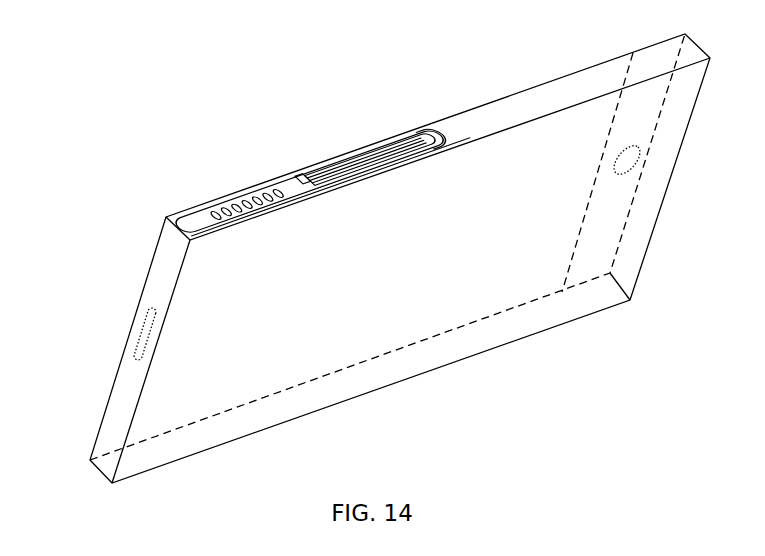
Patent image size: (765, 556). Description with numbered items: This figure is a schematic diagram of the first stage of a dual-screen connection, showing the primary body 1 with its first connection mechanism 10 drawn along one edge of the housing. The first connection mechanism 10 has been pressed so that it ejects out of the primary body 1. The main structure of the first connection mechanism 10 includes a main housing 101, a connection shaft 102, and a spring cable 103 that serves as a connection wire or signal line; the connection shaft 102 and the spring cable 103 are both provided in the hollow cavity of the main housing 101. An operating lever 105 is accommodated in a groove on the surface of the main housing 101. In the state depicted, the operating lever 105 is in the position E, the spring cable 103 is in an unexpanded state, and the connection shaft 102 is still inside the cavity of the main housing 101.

The primary body 1 is at (132, 382).
The first connection mechanism 10 is at (197, 213).
The main housing 101 is at (438, 127).
The connection shaft 102 is at (337, 153).
The spring cable 103 is at (242, 195).
The operating lever 105 is at (288, 175).
The position E is at (293, 170).